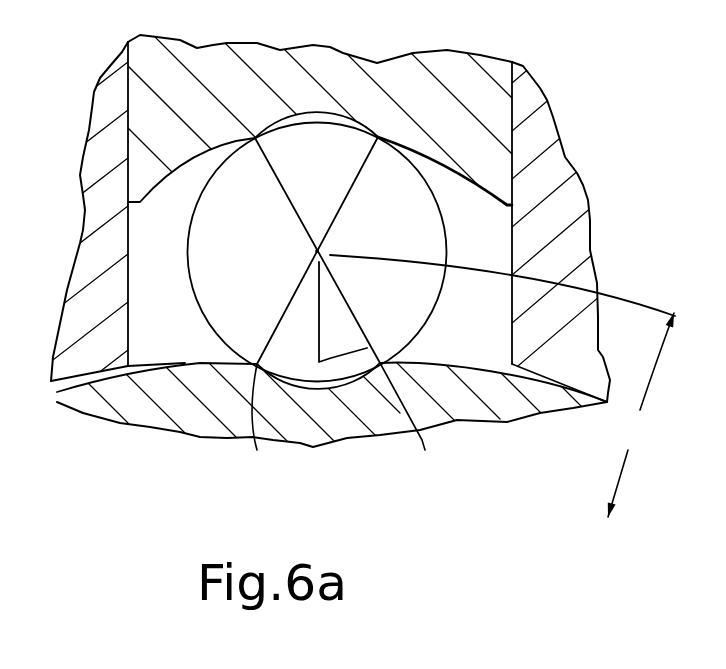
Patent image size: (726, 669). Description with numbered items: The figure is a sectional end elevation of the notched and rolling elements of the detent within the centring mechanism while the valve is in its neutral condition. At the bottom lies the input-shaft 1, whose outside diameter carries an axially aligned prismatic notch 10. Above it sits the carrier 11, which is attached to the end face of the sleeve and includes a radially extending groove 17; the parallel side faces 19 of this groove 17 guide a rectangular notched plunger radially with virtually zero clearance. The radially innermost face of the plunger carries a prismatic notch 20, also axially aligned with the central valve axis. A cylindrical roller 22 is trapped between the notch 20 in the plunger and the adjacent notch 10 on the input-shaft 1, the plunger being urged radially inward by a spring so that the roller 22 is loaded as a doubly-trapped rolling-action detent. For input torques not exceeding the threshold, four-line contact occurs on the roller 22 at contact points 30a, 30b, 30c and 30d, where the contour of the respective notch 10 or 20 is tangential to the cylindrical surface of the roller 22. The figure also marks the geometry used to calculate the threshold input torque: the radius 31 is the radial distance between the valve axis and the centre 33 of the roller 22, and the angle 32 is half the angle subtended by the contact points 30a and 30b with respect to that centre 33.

The input-shaft 1 is at (483, 402).
The prismatic notch 10 is at (378, 366).
The carrier 11 is at (118, 76).
The groove 17 is at (490, 252).
The side face 19 is at (128, 303).
The prismatic notch 20 is at (337, 113).
The cylindrical roller 22 is at (423, 169).
The contact point 30a is at (233, 423).
The contact point 30b is at (424, 423).
The contact point 30c is at (255, 138).
The contact point 30d is at (378, 137).
The radius 31 is at (641, 415).
The angle 32 is at (331, 358).
The centre 33 is at (317, 251).